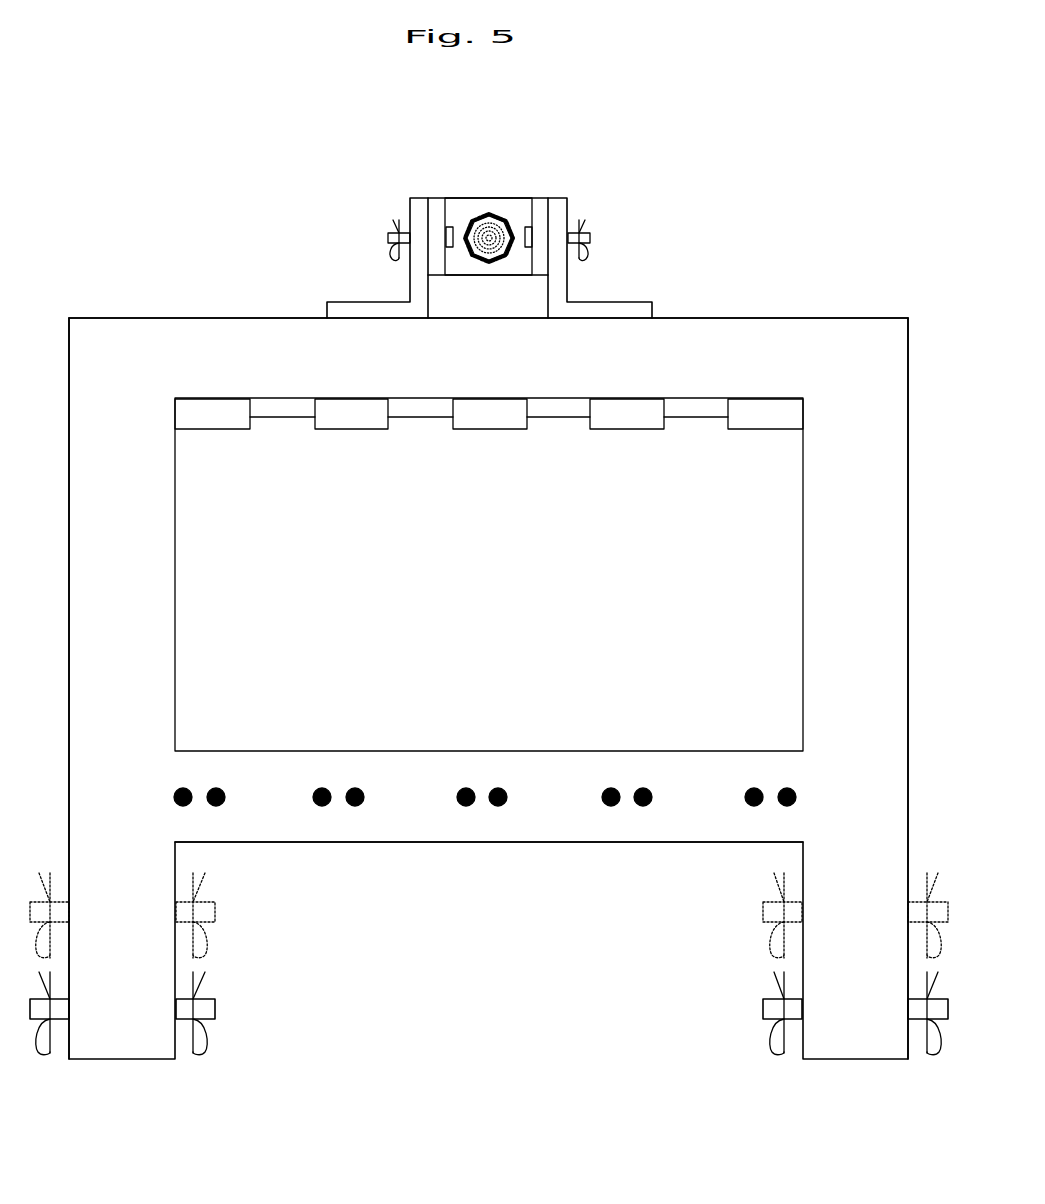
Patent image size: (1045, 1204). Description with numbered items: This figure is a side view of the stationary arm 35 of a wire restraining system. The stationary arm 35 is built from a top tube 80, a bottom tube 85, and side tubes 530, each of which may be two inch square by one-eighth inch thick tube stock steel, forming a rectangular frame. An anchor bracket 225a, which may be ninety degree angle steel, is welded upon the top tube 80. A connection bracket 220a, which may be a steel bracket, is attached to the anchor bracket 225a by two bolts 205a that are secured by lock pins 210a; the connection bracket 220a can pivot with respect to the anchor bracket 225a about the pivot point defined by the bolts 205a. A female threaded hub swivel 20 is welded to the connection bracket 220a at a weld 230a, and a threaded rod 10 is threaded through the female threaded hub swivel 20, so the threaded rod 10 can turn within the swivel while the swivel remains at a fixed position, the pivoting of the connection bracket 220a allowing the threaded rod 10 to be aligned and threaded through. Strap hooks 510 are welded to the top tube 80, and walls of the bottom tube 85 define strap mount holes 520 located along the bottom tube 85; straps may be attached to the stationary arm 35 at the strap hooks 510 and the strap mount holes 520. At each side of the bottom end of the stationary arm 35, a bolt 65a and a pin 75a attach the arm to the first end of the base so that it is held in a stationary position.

The stationary arm 35 is at (132, 298).
The threaded rod 10 is at (490, 226).
The female threaded hub swivel 20 is at (471, 214).
The connection bracket 220a is at (458, 210).
The weld 230a is at (505, 208).
The bolts 205a is at (388, 234).
The lock pins 210a is at (392, 252).
The anchor bracket 225a is at (410, 287).
The top tube 80 is at (474, 362).
The bottom tube 85 is at (404, 820).
The side tubes 530 is at (101, 607).
The strap hooks 510 is at (770, 422).
The strap mount holes 520 is at (205, 784).
The bolt 65a is at (215, 915).
The pin 75a is at (208, 940).